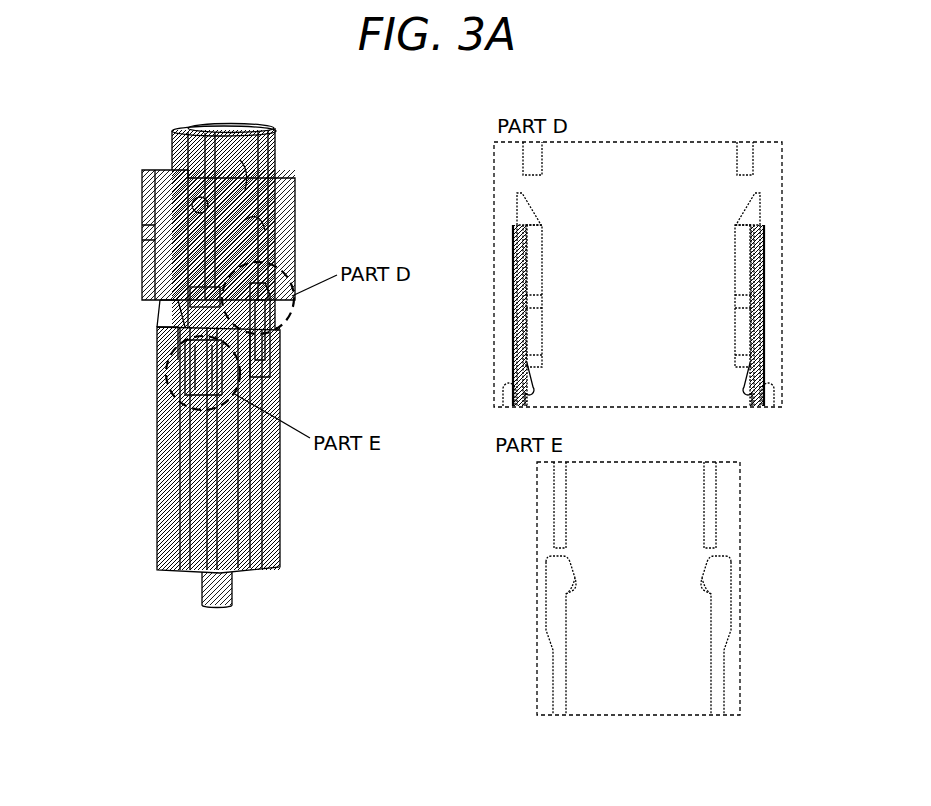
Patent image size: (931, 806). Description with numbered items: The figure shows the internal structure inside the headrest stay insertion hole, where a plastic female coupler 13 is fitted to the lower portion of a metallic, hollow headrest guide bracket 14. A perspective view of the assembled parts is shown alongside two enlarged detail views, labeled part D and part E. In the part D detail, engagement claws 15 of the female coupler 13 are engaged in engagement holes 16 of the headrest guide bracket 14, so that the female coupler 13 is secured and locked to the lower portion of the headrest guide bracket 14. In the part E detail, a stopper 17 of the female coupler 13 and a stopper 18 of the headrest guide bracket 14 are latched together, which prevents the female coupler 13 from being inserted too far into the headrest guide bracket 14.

The female coupler 13 is at (160, 440).
The headrest guide bracket 14 is at (170, 155).
The engagement claws 15 is at (525, 217).
The engagement holes 16 is at (525, 192).
The stopper 17 is at (705, 570).
The stopper 18 is at (560, 540).